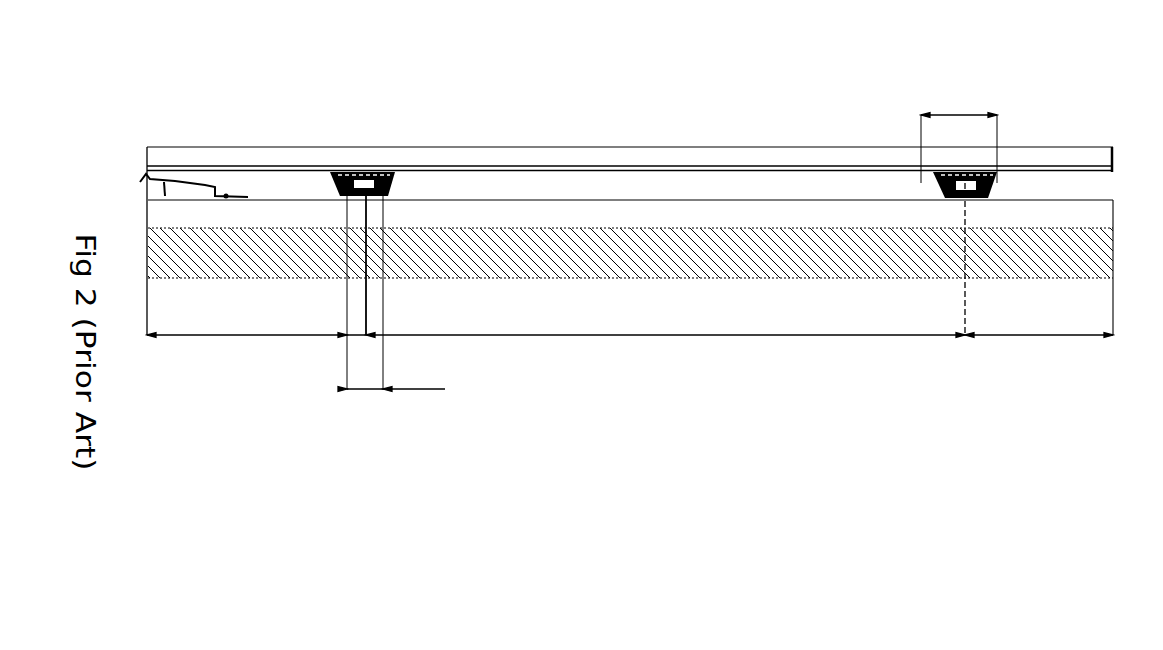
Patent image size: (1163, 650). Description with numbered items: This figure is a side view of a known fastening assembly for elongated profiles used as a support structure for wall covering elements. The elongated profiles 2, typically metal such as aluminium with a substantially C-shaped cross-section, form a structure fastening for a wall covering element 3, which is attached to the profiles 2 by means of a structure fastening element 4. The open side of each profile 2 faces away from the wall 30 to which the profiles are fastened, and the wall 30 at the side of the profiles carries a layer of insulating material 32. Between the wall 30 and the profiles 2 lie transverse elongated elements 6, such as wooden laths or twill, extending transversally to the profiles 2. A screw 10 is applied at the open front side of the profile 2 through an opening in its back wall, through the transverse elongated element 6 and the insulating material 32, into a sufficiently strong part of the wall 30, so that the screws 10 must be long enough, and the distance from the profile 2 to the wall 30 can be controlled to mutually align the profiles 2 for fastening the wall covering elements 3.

The elongated profile 2 is at (393, 185).
The wall covering element 3 is at (833, 162).
The structure fastening element 4 is at (963, 172).
The transverse elongated element 6 is at (1080, 218).
The screw 10 is at (367, 305).
The wall 30 is at (1092, 295).
The insulating material 32 is at (1073, 250).